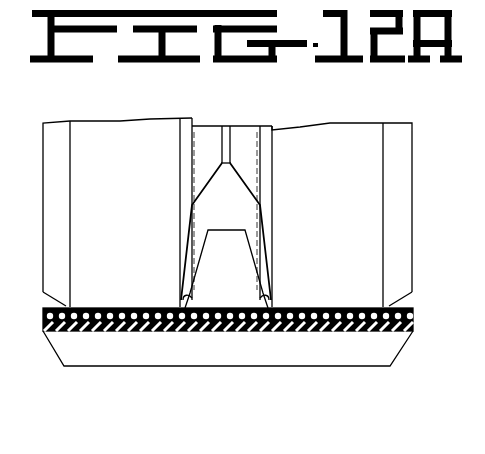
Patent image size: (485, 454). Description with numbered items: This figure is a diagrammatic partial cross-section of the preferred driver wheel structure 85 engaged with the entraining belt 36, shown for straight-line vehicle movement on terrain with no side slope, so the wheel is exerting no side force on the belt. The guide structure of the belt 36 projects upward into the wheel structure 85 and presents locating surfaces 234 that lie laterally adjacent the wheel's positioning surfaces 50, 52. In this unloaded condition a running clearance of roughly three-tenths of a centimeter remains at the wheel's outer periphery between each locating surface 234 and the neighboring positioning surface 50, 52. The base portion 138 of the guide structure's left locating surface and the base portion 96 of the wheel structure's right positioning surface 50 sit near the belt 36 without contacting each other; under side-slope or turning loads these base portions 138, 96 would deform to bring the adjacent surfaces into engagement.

The driver wheel structure 85 is at (306, 118).
The slot side walls 234 is at (175, 267).
The positioning surface 50 is at (197, 254).
The positioning surface 52 is at (257, 255).
The base portion 96 is at (184, 302).
The base portion 138 is at (269, 302).
The entraining belt 36 is at (133, 380).